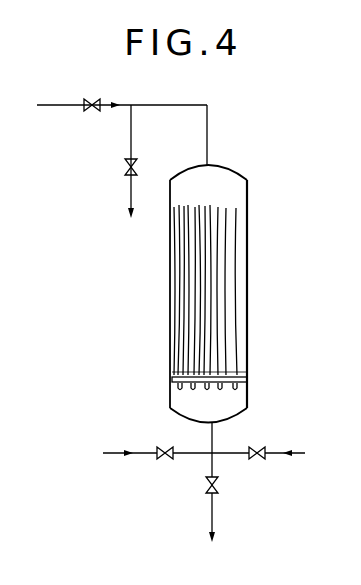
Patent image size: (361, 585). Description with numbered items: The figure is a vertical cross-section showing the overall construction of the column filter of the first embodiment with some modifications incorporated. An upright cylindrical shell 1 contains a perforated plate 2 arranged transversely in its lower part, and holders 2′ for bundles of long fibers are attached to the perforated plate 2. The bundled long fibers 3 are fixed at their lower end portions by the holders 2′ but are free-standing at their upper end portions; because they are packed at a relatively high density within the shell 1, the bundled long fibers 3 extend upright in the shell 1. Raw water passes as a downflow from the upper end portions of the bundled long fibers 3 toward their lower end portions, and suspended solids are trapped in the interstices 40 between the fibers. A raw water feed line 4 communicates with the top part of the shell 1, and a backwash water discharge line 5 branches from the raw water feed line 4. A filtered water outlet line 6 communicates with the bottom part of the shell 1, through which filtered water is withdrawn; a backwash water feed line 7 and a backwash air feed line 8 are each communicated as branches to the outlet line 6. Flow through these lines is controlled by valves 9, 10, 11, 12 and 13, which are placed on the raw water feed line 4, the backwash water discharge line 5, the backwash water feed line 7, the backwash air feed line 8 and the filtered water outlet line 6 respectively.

The shell 1 is at (249, 236).
The perforated plate 2 is at (250, 391).
The holders 2′ is at (242, 363).
The bundled long fibers 3 is at (240, 290).
The interstices 40 is at (232, 328).
The raw water feed line 4 is at (207, 138).
The backwash water discharge line 5 is at (131, 133).
The filtered water outlet line 6 is at (212, 460).
The backwash water feed line 7 is at (133, 455).
The backwash air feed line 8 is at (300, 455).
The valve 9 is at (90, 100).
The valve 10 is at (124, 167).
The valve 11 is at (165, 459).
The valve 12 is at (258, 445).
The valve 13 is at (219, 491).